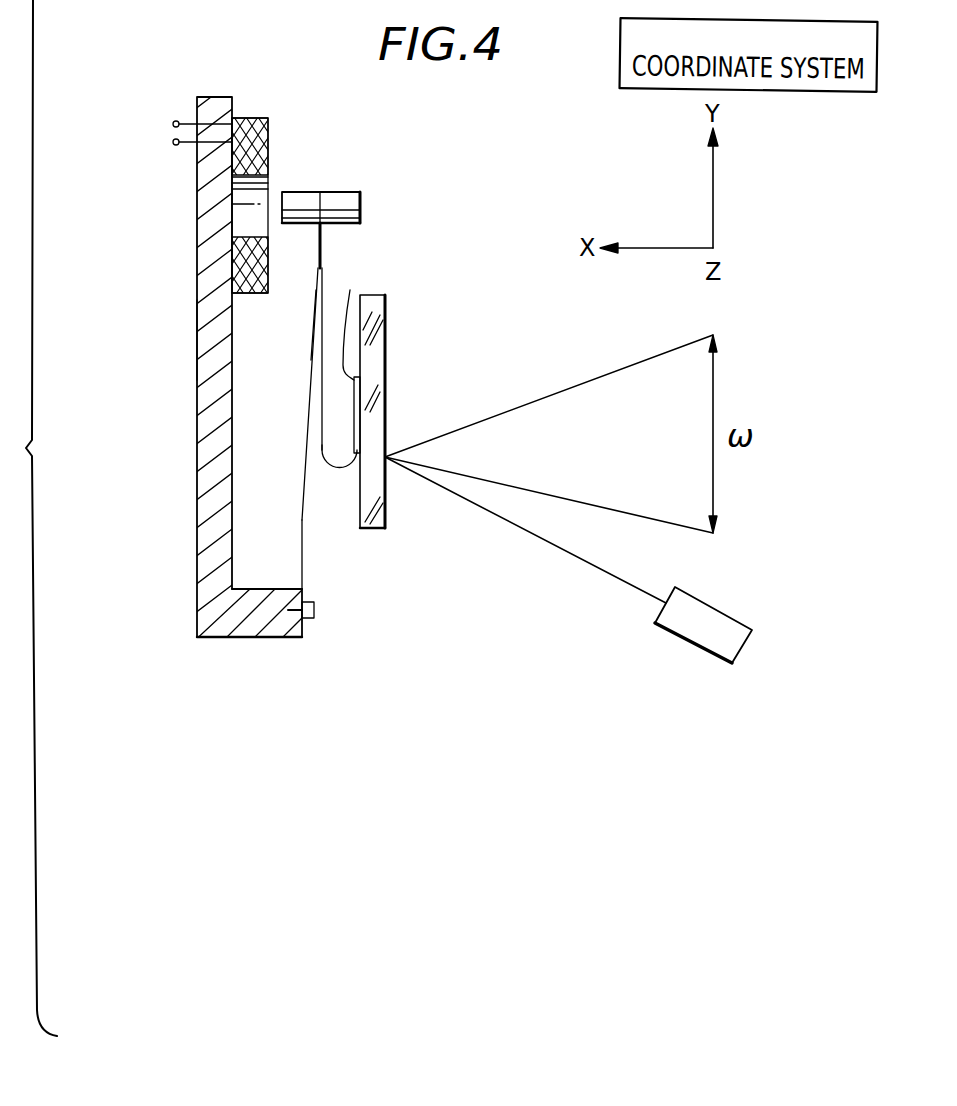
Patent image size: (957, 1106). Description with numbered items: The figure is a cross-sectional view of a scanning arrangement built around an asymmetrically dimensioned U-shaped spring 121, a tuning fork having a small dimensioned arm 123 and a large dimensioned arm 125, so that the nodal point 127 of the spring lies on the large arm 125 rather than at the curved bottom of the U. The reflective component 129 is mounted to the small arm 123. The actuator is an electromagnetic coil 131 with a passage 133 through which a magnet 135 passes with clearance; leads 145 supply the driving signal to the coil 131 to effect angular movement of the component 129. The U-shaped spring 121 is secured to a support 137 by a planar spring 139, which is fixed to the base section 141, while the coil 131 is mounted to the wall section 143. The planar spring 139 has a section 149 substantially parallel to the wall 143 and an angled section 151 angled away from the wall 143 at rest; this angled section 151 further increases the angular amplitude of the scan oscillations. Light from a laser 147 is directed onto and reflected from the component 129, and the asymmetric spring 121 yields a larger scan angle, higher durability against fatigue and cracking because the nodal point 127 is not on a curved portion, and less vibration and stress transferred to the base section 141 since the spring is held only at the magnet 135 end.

The U-shaped spring 121 is at (342, 468).
The small dimensioned arm 123 is at (350, 290).
The large dimensioned arm 125 is at (322, 295).
The nodal point 127 is at (320, 437).
The component 129 is at (385, 337).
The electromagnetic coil 131 is at (262, 118).
The passage 133 is at (270, 183).
The magnet 135 is at (325, 192).
The support 137 is at (207, 506).
The planar spring 139 is at (298, 387).
The base section 141 is at (252, 640).
The wall section 143 is at (197, 342).
The leads 145 is at (170, 110).
The laser 147 is at (738, 652).
The section of spring 149 is at (300, 528).
The angled section 151 is at (308, 335).